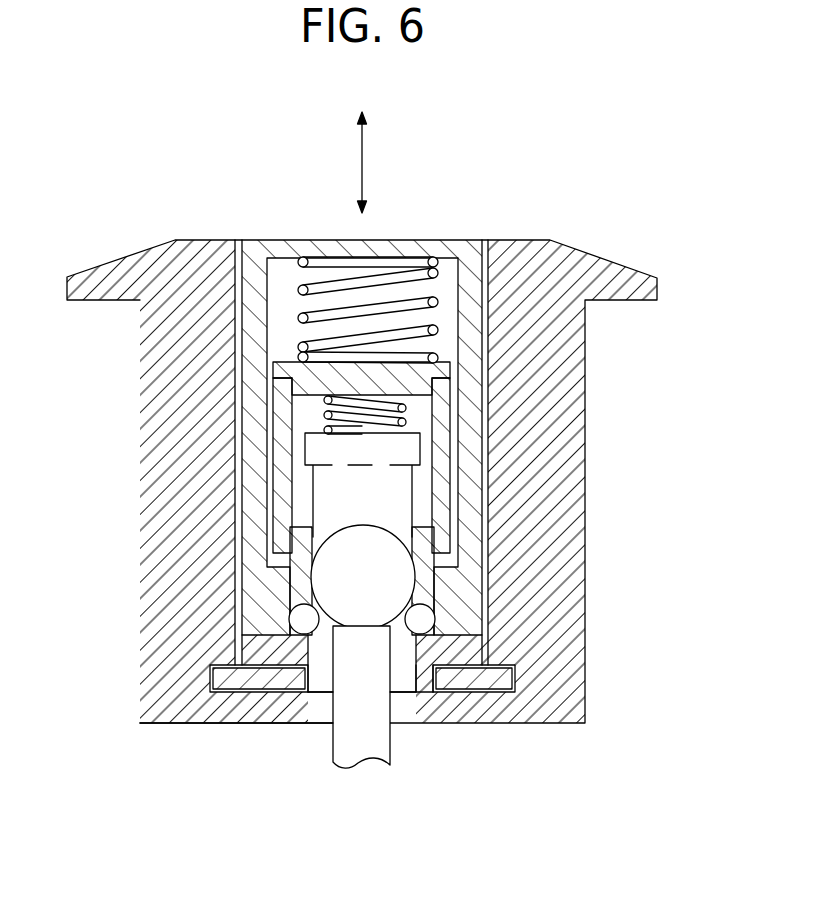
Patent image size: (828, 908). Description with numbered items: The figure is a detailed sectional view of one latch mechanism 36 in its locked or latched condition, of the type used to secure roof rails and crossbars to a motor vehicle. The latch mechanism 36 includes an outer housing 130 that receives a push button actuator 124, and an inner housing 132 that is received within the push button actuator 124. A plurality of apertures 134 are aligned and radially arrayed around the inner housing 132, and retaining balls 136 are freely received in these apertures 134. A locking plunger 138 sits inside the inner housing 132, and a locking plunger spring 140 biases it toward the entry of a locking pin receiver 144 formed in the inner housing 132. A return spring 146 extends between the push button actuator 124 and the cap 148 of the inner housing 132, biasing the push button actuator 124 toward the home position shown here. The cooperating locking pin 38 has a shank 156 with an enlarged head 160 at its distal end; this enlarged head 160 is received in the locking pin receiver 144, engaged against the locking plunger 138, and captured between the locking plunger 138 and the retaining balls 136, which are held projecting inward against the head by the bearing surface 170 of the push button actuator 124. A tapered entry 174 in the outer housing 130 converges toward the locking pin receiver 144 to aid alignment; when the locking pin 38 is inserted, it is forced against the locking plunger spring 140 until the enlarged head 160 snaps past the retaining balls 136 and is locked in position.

The latch mechanism 36 is at (573, 222).
The locking pin 38 is at (320, 714).
The push button actuator 124 is at (450, 247).
The outer housing 130 is at (572, 482).
The inner housing 132 is at (437, 417).
The apertures 134 is at (433, 618).
The retaining balls 136 is at (308, 688).
The locking plunger 138 is at (385, 507).
The locking plunger spring 140 is at (327, 413).
The locking pin receiver 144 is at (407, 677).
The return spring 146 is at (325, 285).
The cap 148 is at (370, 368).
The shank 156 is at (382, 703).
The enlarged head 160 is at (385, 590).
The bearing surface 170 is at (290, 620).
The tapered entry 174 is at (455, 712).